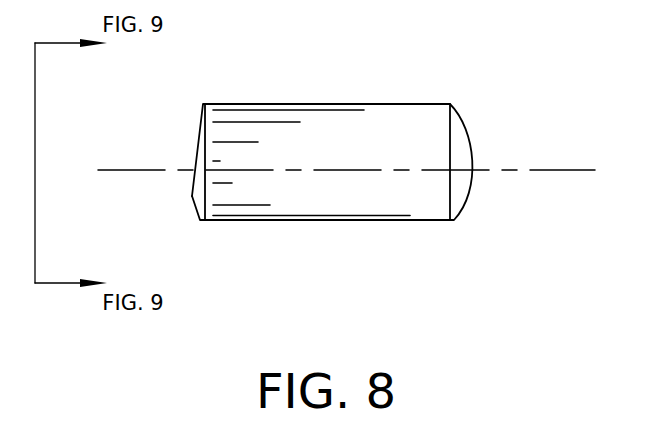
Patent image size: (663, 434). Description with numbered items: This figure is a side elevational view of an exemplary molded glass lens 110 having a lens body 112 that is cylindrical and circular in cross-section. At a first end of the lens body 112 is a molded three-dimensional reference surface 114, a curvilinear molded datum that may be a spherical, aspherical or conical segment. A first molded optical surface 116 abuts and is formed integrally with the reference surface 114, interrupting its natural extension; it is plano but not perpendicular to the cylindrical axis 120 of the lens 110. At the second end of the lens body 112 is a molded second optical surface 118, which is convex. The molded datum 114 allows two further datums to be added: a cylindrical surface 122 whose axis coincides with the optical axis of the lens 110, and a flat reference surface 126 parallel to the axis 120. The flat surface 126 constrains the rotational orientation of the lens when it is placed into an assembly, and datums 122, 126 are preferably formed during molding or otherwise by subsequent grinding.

The molded glass lens 110 is at (325, 150).
The lens body 112 is at (357, 104).
The molded three-dimensional reference surface 114 is at (193, 209).
The first molded optical surface 116 is at (202, 123).
The molded second optical surface 118 is at (466, 127).
The cylindrical axis 120 is at (548, 170).
The cylindrical surface 122 is at (293, 133).
The flat reference surface 126 is at (371, 221).